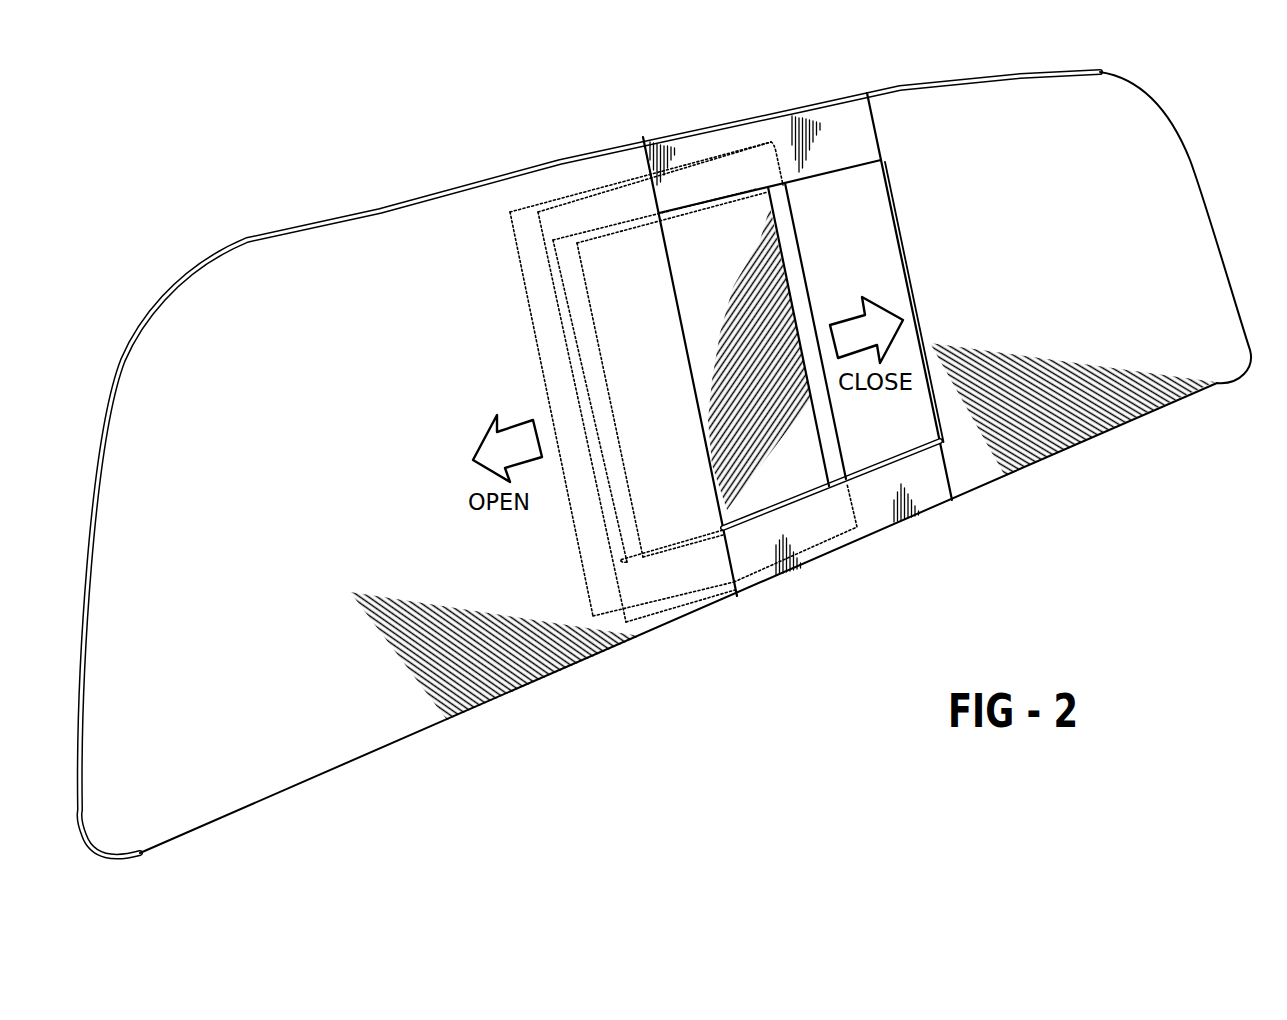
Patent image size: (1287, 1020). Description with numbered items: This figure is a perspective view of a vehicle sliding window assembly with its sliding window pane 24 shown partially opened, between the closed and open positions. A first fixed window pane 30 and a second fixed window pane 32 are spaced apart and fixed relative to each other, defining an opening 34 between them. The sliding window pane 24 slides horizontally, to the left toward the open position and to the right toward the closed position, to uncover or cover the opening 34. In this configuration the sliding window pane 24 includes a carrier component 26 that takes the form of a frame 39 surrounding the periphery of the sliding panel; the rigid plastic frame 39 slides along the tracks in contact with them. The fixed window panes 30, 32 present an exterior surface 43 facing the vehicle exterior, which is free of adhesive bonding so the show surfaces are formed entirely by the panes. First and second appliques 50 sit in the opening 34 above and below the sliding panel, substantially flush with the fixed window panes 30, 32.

The sliding window pane 24 is at (684, 236).
The carrier component 26 is at (793, 186).
The first fixed window pane 30 is at (369, 486).
The second fixed window pane 32 is at (1085, 246).
The opening 34 is at (873, 445).
The frame 39 is at (515, 256).
The exterior surface 43 is at (298, 267).
The applique 50 is at (740, 133).